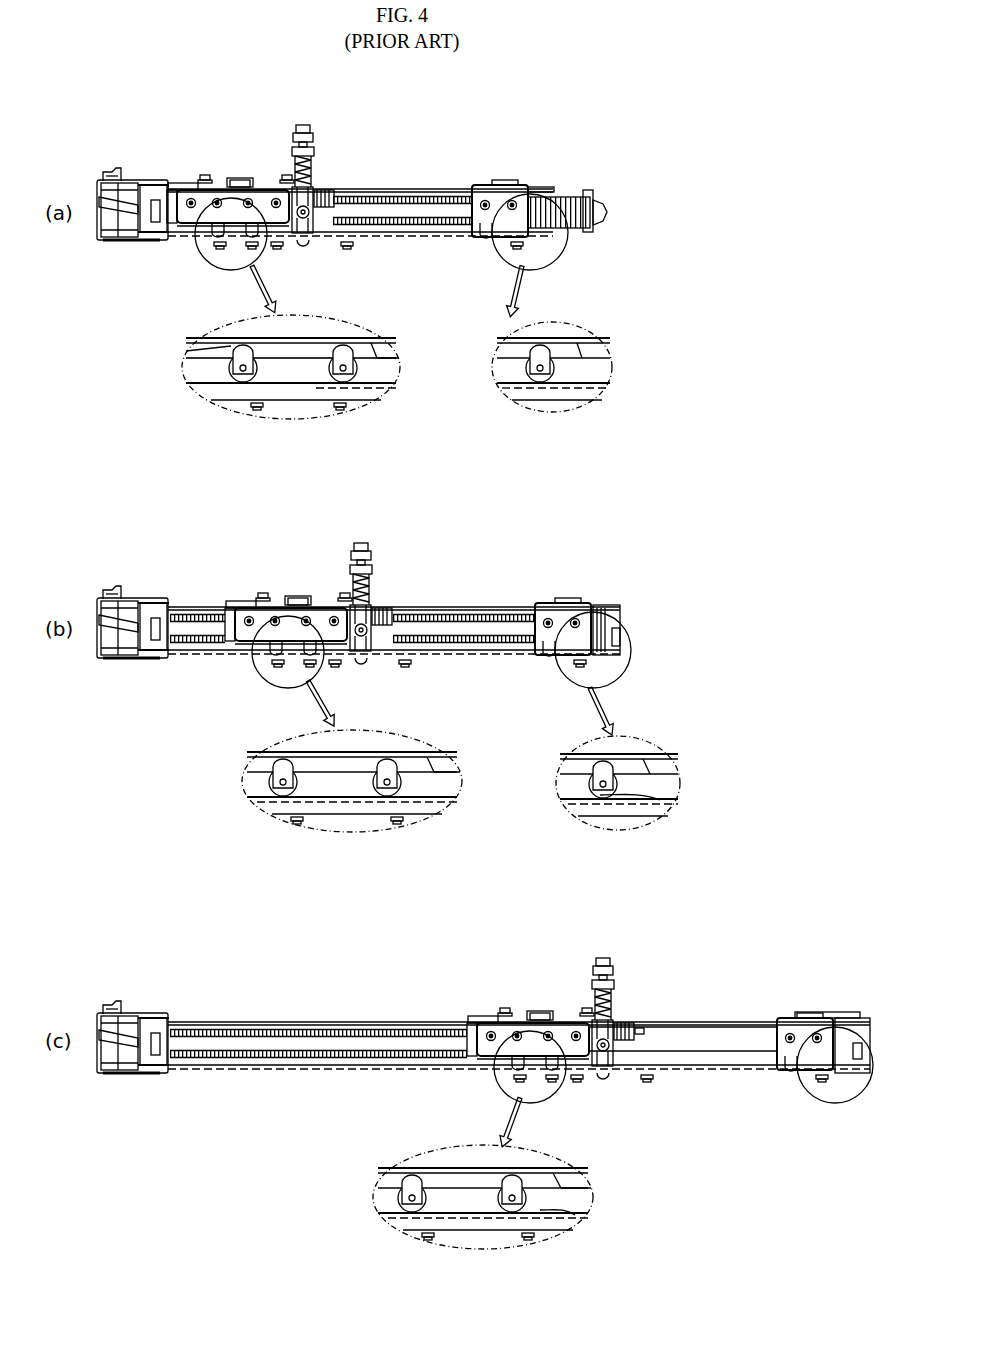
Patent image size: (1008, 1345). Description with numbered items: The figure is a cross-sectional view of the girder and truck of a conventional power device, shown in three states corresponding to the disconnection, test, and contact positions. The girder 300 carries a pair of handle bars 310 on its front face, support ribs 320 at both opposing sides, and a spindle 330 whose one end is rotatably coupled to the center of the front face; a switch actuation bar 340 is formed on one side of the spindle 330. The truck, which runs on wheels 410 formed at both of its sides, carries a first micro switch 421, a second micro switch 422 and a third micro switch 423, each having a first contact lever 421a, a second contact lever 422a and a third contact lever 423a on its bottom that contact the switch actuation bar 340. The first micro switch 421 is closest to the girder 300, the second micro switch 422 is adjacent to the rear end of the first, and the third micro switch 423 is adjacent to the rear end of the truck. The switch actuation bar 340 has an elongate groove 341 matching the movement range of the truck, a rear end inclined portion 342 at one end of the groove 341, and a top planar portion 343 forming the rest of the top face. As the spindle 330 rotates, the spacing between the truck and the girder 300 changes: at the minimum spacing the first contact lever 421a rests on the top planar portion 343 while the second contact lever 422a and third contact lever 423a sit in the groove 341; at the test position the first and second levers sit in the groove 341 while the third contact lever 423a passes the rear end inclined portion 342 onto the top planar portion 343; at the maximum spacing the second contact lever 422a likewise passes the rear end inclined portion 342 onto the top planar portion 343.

The girder 300 is at (97, 241).
The handle bars 310 is at (105, 171).
The support ribs 320 is at (154, 200).
The spindle 330 is at (386, 197).
The switch actuation bar 340 is at (185, 237).
The groove 341 is at (372, 385).
The rear end inclined portion 342 is at (660, 800).
The top planar portion 343 is at (275, 385).
The wheels 410 is at (547, 259).
The first micro switch 421 is at (205, 176).
The first contact lever 421a is at (235, 381).
The second micro switch 422 is at (274, 200).
The second contact lever 422a is at (338, 381).
The third micro switch 423 is at (510, 187).
The third contact lever 423a is at (548, 381).